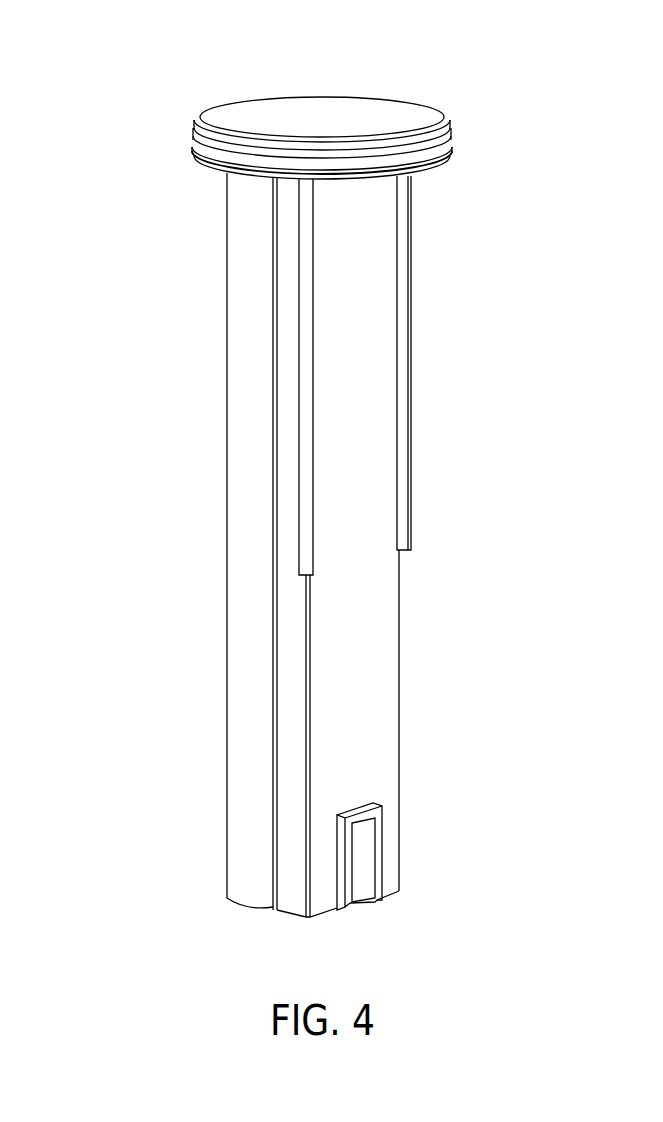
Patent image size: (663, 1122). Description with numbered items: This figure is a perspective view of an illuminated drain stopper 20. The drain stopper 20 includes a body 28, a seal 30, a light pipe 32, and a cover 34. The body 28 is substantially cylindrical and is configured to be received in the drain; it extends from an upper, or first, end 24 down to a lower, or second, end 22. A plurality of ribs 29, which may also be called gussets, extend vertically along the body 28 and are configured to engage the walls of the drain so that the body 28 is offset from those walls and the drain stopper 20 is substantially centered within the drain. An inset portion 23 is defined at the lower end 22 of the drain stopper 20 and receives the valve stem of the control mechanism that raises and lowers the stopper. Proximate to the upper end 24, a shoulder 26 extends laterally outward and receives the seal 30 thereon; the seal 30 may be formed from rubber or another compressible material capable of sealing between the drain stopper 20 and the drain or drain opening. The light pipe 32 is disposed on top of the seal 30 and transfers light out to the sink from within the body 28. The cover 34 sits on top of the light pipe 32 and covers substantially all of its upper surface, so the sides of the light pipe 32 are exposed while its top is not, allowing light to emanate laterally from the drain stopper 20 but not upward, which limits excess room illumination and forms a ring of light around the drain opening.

The drain stopper 20 is at (168, 78).
The lower end 22 is at (212, 921).
The inset portion 23 is at (363, 862).
The upper end 24 is at (168, 163).
The shoulder 26 is at (420, 173).
The body 28 is at (357, 640).
The ribs 29 is at (307, 365).
The seal 30 is at (448, 147).
The light pipe 32 is at (407, 158).
The cover 34 is at (352, 113).